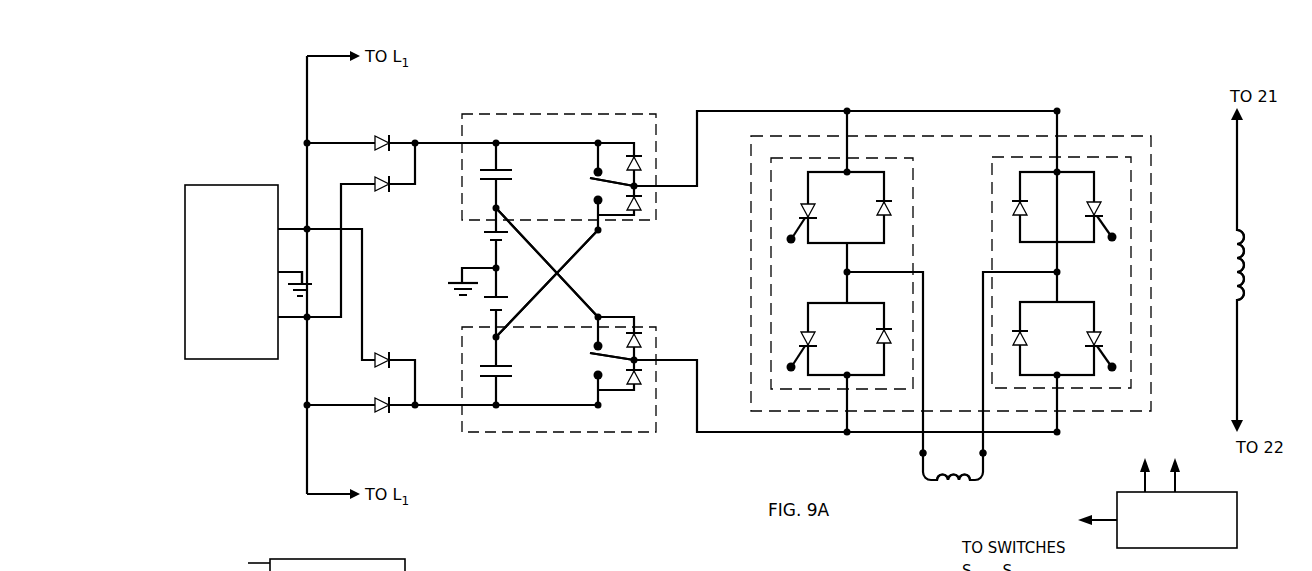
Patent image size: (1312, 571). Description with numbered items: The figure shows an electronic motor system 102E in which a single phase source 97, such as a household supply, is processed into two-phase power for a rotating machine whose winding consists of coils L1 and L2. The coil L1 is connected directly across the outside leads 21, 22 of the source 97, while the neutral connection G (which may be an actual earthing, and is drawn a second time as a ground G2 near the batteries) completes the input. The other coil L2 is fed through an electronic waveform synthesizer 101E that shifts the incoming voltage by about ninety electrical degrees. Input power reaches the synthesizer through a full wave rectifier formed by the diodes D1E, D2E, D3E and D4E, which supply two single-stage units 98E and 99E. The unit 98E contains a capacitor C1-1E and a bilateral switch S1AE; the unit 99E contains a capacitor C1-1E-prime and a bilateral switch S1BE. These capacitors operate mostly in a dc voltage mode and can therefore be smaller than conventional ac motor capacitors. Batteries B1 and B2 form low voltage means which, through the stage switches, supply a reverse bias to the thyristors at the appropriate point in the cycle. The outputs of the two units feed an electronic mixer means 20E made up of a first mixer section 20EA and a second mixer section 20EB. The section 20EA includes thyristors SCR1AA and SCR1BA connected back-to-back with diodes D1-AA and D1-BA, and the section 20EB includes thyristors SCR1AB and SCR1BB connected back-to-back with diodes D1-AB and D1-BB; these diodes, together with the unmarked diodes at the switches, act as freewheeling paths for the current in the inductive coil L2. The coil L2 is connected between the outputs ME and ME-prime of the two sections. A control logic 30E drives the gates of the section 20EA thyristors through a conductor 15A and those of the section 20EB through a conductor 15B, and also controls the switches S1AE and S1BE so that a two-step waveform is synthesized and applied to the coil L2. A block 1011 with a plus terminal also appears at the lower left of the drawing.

The single phase source 97 is at (213, 185).
The outside lead 21 is at (296, 228).
The outside lead 22 is at (296, 360).
The single-stage unit 98E is at (566, 113).
The single-stage unit 99E is at (563, 433).
The electronic waveform synthesizer 101E is at (751, 103).
The electronic motor system 102E is at (485, 453).
The electronic mixer means 20E is at (836, 412).
The first mixer section 20EA is at (870, 133).
The second mixer section 20EB is at (1134, 155).
The conductor 15A is at (1140, 474).
The conductor 15B is at (1180, 480).
The control logic 30E is at (1166, 549).
The auxiliary source 1011 is at (380, 560).
The diode D1E is at (388, 139).
The diode D2E is at (382, 190).
The diode D3E is at (384, 352).
The diode D4E is at (380, 412).
The capacitor C1-1E is at (513, 175).
The capacitor C1-1E-prime is at (512, 377).
The battery B1 is at (480, 236).
The battery B2 is at (504, 306).
The neutral connection G is at (311, 284).
The ground G2 is at (460, 290).
The bilateral switch S1AE is at (614, 180).
The bilateral switch S1BE is at (614, 355).
The thyristor SCR1AA is at (806, 212).
The thyristor SCR1BA is at (806, 340).
The thyristor SCR1AB is at (1098, 210).
The thyristor SCR1BB is at (1098, 340).
The diode D1-AA is at (892, 208).
The diode D1-BA is at (892, 336).
The diode D1-AB is at (1018, 200).
The diode D1-BB is at (1020, 350).
The coil L1 is at (1234, 272).
The coil L2 is at (946, 488).
The output ME is at (920, 455).
The output ME-prime is at (987, 460).